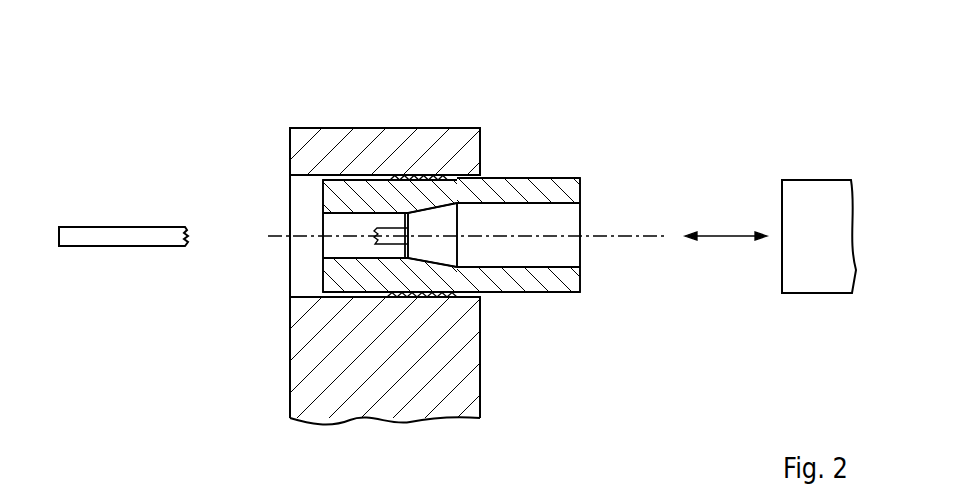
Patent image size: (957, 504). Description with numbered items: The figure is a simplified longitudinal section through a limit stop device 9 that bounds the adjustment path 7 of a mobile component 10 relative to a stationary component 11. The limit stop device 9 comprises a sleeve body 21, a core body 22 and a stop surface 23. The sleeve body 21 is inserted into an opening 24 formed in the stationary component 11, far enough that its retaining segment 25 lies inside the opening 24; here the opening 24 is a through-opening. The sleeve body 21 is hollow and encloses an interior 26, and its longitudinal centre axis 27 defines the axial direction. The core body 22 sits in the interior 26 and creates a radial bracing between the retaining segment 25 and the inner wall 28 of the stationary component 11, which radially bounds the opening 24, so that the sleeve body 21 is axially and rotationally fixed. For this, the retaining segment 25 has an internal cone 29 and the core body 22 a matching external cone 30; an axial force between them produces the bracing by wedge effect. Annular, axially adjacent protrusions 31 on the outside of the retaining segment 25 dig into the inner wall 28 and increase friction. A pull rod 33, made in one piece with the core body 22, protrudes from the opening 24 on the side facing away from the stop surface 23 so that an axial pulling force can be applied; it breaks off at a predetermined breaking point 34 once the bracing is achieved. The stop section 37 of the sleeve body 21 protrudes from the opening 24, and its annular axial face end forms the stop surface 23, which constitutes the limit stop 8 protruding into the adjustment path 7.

The adjustment path 7 is at (726, 233).
The limit stop 8 is at (581, 205).
The limit stop device 9 is at (562, 137).
The mobile component 10 is at (818, 180).
The stationary component 11 is at (323, 118).
The sleeve body 21 is at (518, 168).
The core body 22 is at (433, 195).
The stop surface 23 is at (581, 279).
The opening 24 is at (303, 263).
The retaining segment 25 is at (387, 277).
The interior 26 is at (562, 252).
The longitudinal centre axis 27 is at (652, 232).
The inner wall 28 is at (303, 179).
The internal cone 29 is at (458, 218).
The external cone 30 is at (412, 212).
The protrusion 31 is at (452, 297).
The pull rod 33 is at (120, 226).
The predetermined breaking point 34 is at (377, 228).
The stop section 37 is at (552, 293).